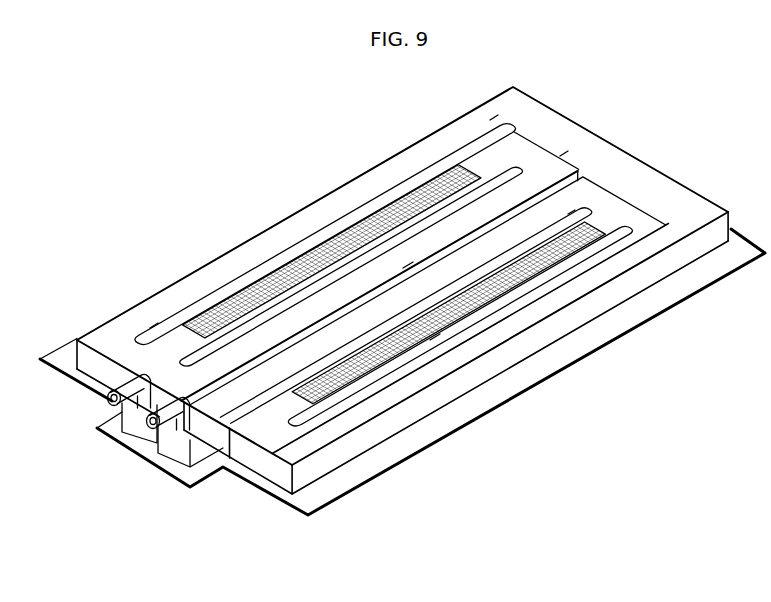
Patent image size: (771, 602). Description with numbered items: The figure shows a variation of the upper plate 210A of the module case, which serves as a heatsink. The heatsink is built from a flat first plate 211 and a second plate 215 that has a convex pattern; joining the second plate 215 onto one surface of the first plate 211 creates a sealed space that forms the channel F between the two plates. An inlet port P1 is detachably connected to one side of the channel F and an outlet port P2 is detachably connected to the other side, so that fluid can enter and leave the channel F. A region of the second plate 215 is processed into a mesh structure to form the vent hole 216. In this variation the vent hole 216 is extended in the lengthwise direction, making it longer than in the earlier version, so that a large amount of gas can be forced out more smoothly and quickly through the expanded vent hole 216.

The upper plate 210A is at (172, 121).
The first plate 211 is at (272, 504).
The second plate 215 is at (322, 490).
The vent hole 216 is at (330, 253).
The channel F is at (383, 168).
The inlet port P1 is at (109, 389).
The outlet port P2 is at (96, 427).